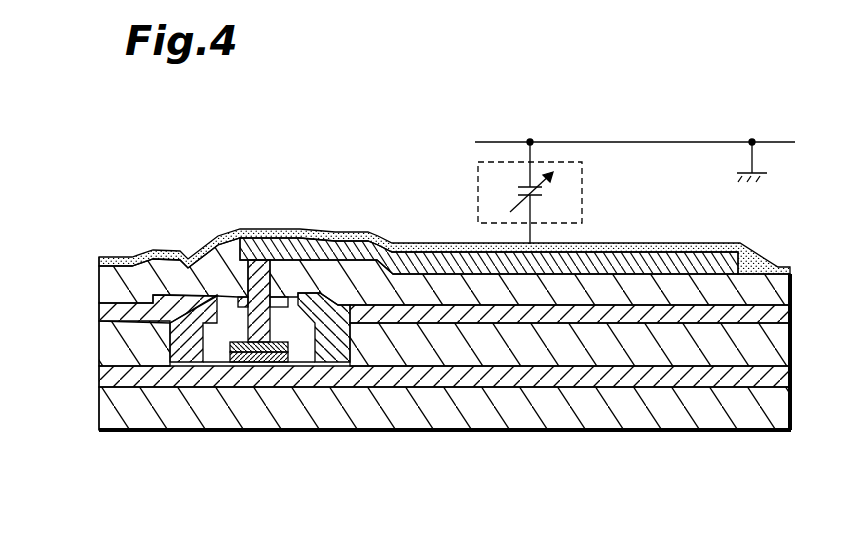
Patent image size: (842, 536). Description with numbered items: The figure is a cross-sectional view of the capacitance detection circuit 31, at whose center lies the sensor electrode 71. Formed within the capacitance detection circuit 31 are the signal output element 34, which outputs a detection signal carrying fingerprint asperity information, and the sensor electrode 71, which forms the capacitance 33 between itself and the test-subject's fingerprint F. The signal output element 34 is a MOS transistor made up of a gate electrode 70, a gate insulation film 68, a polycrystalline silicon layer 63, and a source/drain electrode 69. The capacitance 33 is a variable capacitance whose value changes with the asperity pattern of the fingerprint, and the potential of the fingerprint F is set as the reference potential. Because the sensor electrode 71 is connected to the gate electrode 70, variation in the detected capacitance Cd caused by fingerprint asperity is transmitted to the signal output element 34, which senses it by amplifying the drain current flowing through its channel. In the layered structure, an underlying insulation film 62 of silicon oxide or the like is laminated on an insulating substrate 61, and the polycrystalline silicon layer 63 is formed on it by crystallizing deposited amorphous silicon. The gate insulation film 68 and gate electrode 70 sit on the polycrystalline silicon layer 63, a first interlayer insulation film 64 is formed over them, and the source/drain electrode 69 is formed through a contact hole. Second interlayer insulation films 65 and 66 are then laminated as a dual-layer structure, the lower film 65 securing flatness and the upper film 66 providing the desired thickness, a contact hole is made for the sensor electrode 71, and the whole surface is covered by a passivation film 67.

The capacitance detection circuit 31 is at (186, 223).
The capacitance 33 is at (496, 193).
The signal output element 34 is at (260, 383).
The insulating substrate 61 is at (113, 413).
The underlying insulation film 62 is at (105, 378).
The polycrystalline silicon layer 63 is at (316, 357).
The first interlayer insulation film 64 is at (110, 348).
The lower second interlayer insulation film 65 is at (105, 313).
The upper second interlayer insulation film 66 is at (110, 285).
The passivation film 67 is at (98, 260).
The gate insulation film 68 is at (256, 412).
The source/drain electrode 69 is at (190, 352).
The gate electrode 70 is at (268, 357).
The sensor electrode 71 is at (622, 267).
The fingerprint F is at (625, 156).
The detected capacitance Cd is at (541, 193).